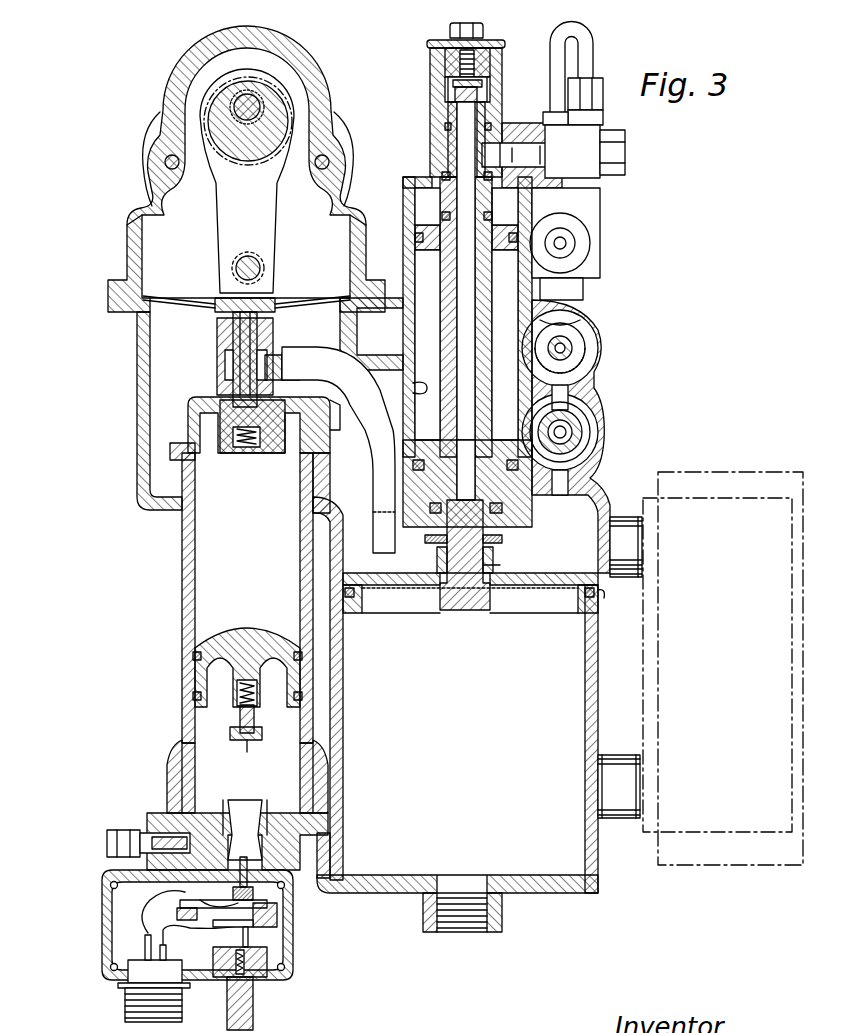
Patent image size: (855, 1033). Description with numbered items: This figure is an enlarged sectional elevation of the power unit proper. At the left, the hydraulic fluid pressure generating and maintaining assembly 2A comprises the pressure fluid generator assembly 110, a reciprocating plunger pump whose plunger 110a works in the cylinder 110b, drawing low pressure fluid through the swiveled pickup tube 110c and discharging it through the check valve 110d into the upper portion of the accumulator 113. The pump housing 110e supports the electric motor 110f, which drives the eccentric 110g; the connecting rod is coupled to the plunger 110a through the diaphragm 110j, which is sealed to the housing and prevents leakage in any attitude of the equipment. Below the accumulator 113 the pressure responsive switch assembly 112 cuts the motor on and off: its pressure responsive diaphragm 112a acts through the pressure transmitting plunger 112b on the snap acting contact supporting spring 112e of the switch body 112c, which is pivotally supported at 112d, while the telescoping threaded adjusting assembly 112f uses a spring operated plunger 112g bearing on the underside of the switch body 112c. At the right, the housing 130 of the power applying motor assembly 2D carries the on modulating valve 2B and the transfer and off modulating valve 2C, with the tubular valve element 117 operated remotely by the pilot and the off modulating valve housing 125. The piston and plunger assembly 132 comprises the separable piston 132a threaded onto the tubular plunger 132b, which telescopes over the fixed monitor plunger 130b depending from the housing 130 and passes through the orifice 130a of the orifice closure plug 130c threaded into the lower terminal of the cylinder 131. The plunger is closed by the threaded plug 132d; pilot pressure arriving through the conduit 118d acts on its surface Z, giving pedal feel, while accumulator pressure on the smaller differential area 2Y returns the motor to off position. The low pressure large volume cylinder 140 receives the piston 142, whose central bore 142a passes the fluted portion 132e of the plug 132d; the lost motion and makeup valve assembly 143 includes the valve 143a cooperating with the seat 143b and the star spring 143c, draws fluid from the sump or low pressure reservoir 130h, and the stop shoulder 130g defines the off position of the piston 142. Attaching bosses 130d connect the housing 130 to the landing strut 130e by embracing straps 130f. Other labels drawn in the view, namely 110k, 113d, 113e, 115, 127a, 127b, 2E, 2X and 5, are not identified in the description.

The pressure fluid generator assembly 110 is at (125, 248).
The reciprocable plunger 110a is at (238, 348).
The cylinder 110b is at (220, 385).
The swiveled pickup tube 110c is at (376, 483).
The check valve 110d is at (220, 408).
The pump housing 110e is at (136, 212).
The electric motor 110f is at (162, 130).
The eccentric 110g is at (247, 92).
The diaphragm 110j is at (210, 296).
The lever arm 110k is at (262, 230).
The pressure responsive switch assembly 112 is at (100, 910).
The pressure responsive diaphragm 112a is at (247, 812).
The pressure transmitting plunger 112b is at (270, 898).
The switch body 112c is at (270, 925).
The pivot support 112d is at (145, 918).
The snap acting switch contact supporting spring 112e is at (222, 924).
The telescoping threaded adjusting assembly 112f is at (225, 992).
The spring operated plunger 112g is at (248, 940).
The accumulator 113 is at (184, 553).
The shoulder 113d is at (296, 425).
The piston 113e is at (195, 680).
The valve 115 is at (598, 335).
The tubular valve element 117 is at (575, 355).
The conduit 118d is at (596, 30).
The off modulating valve housing 125 is at (590, 488).
The valve 127a is at (565, 425).
The valve seat 127b is at (572, 430).
The housing 130 is at (405, 178).
The orifice 130a is at (500, 490).
The monitor plunger 130b is at (450, 347).
The orifice closure plug 130c is at (503, 508).
The attaching bosses 130d is at (640, 565).
The landing strut 130e is at (695, 865).
The embracing straps 130f is at (752, 833).
The stop shoulder 130g is at (619, 601).
The low pressure reservoir 130h is at (345, 552).
The cylinder 131 is at (412, 388).
The piston and plunger assembly 132 is at (500, 297).
The separable piston 132a is at (500, 245).
The tubular plunger 132b is at (500, 320).
The threaded plug 132d is at (462, 612).
The fluted portion 132e is at (495, 568).
The low-pressure large volume cylinder 140 is at (590, 734).
The piston 142 is at (578, 608).
The central bore 142a is at (437, 608).
The lost motion and makeup valve assembly 143 is at (590, 545).
The valve 143a is at (502, 537).
The seat 143b is at (437, 555).
The star spring 143c is at (522, 598).
The hydraulic fluid pressure generating and maintaining assembly 2A is at (182, 612).
The on modulating valve 2B is at (612, 347).
The transfer and off modulating valve 2C is at (612, 433).
The power applying motor assembly 2D is at (412, 178).
The section line 2E is at (602, 695).
The section line 2X is at (428, 203).
The smaller differential area 2Y is at (427, 262).
The surface Z is at (466, 497).
The section line 5 is at (538, 61).